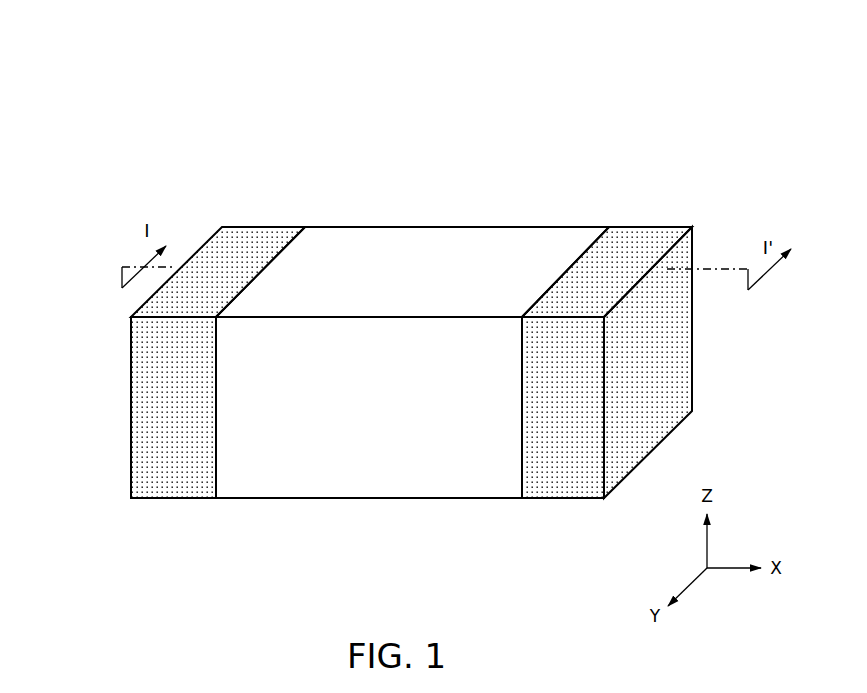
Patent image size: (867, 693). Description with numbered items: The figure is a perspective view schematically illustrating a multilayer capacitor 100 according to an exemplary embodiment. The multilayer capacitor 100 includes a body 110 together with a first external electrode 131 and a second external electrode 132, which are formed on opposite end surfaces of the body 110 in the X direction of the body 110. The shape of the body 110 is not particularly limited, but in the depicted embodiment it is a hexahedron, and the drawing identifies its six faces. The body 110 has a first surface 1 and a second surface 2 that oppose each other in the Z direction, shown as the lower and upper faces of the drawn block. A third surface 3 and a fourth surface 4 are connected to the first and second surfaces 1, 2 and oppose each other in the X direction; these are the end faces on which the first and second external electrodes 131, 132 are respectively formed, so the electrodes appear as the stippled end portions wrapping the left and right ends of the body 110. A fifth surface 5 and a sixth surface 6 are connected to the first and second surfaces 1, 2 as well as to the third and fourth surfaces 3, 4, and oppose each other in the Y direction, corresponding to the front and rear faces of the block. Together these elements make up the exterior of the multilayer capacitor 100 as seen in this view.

The multilayer capacitor 100 is at (462, 60).
The body 110 is at (412, 361).
The first external electrode 131 is at (165, 315).
The second external electrode 132 is at (645, 317).
The first surface 1 is at (353, 474).
The second surface 2 is at (563, 247).
The third surface 3 is at (129, 402).
The fourth surface 4 is at (668, 367).
The fifth surface 5 is at (507, 474).
The sixth surface 6 is at (349, 226).